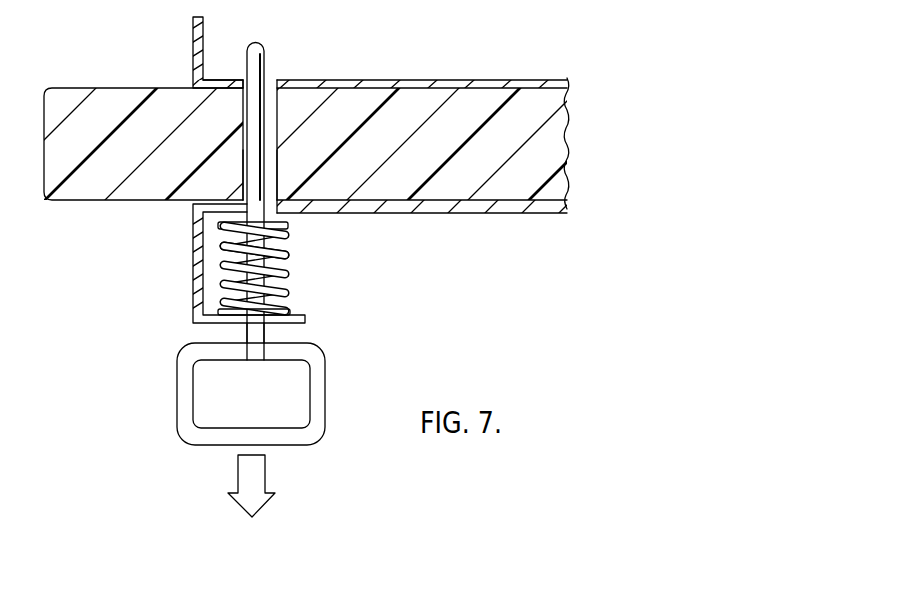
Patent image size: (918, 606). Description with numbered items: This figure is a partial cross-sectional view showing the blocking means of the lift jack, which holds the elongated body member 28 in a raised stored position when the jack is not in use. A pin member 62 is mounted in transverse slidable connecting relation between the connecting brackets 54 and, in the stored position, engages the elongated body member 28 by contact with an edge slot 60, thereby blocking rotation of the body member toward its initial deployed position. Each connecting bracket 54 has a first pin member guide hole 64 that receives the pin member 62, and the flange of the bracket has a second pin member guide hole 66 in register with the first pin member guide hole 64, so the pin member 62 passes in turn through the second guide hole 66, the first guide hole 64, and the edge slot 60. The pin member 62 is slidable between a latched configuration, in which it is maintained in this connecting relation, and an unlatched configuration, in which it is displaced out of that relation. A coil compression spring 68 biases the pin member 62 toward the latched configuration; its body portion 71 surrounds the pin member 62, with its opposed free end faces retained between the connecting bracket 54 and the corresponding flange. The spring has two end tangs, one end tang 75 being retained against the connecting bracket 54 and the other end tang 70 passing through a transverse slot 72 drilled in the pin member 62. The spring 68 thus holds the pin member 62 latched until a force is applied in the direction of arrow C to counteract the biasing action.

The elongated body member 28 is at (377, 162).
The connecting bracket 54 is at (413, 80).
The edge slot 60 is at (275, 113).
The pin member 62 is at (247, 62).
The first pin member guide hole 64 is at (243, 193).
The second pin member guide hole 66 is at (243, 328).
The coil compression spring 68 is at (287, 283).
The end tang 70 is at (288, 225).
The body portion 71 is at (287, 250).
The transverse slot 72 is at (203, 215).
The end tang 75 is at (288, 309).
The arrow C is at (265, 462).